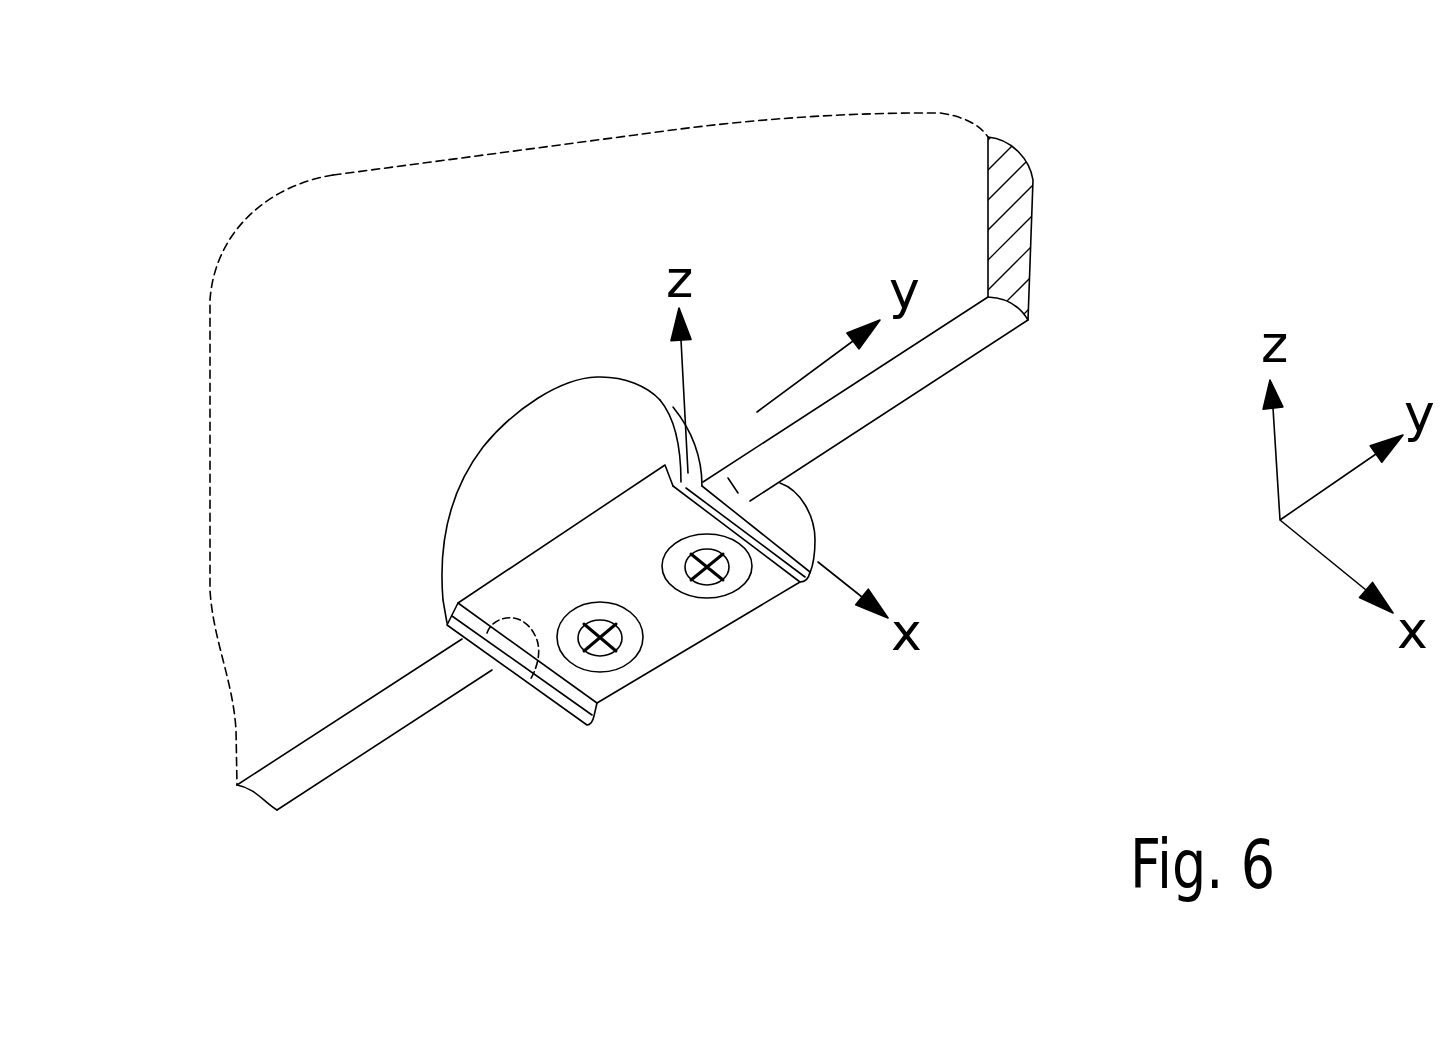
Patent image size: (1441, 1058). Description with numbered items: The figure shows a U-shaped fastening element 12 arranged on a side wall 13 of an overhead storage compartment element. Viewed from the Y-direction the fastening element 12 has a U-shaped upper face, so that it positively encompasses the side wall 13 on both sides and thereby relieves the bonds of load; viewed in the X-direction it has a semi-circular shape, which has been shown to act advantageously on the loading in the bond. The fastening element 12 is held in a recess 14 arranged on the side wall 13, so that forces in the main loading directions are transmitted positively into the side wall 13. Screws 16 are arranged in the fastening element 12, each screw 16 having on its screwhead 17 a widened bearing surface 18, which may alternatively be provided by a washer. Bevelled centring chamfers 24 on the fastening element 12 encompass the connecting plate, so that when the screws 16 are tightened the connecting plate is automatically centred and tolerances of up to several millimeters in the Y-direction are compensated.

The fastening element 12 is at (493, 464).
The side wall 13 is at (303, 546).
The recess 14 is at (757, 504).
The screw 16 is at (788, 667).
The screwhead 17 is at (715, 594).
The bearing surface 18 is at (682, 597).
The centring chamfer 24 is at (530, 680).